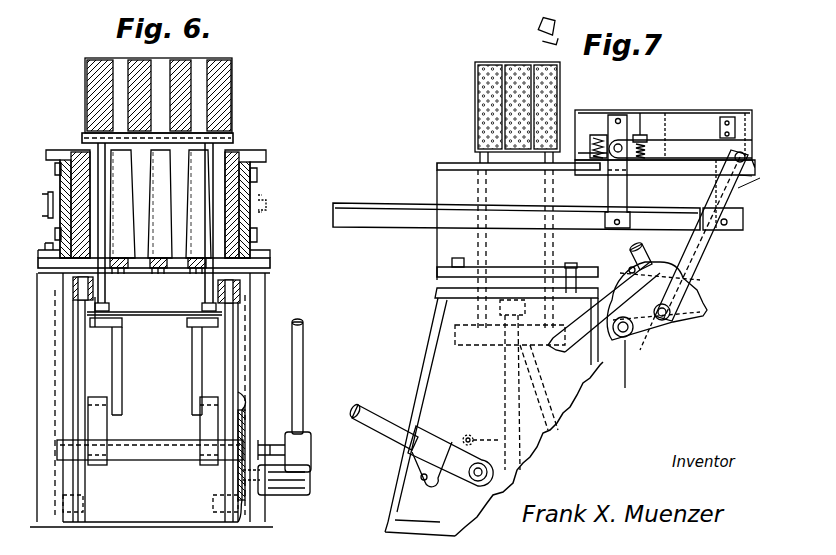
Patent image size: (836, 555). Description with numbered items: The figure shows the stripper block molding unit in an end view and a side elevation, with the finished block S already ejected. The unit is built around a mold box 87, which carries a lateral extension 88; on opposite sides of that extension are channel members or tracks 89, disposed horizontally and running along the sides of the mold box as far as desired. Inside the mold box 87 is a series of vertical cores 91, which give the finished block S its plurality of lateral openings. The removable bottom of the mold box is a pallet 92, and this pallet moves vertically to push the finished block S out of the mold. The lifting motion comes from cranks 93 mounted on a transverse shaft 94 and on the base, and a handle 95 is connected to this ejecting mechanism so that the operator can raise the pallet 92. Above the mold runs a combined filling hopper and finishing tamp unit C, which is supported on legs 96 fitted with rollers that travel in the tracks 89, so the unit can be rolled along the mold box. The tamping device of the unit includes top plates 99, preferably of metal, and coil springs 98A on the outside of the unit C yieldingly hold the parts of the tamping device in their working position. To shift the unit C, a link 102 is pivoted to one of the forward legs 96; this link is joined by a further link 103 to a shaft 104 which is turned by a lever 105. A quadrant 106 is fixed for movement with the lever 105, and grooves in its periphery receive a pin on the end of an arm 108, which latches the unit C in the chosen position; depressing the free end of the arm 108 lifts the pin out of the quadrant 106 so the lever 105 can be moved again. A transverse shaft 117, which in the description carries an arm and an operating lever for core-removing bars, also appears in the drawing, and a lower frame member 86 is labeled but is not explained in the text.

In FIG. 6, the finished block S is at (200, 103).
In FIG. 7, the finished block S is at (490, 72).
In FIG. 6, the pallet 92 is at (236, 131).
In FIG. 6, the vertical cores 91 is at (198, 175).
In FIG. 6, the mold box 87 is at (256, 190).
In FIG. 7, the mold box 87 is at (448, 182).
In FIG. 6, the tracks 89 is at (262, 202).
In FIG. 7, the tracks 89 is at (420, 210).
In FIG. 6, the lower frame 86 is at (253, 330).
In FIG. 6, the cranks 93 is at (208, 432).
In FIG. 6, the transverse shaft 94 is at (140, 450).
In FIG. 7, the transverse shaft 94 is at (484, 478).
In FIG. 6, the handle 95 is at (299, 375).
In FIG. 7, the handle 95 is at (385, 428).
In FIG. 7, the legs 96 is at (715, 180).
In FIG. 7, the coil springs 98A is at (586, 132).
In FIG. 7, the top plates 99 is at (643, 130).
In FIG. 7, the link 102 is at (670, 150).
In FIG. 7, the combined filling hopper and finishing tamp unit C is at (745, 114).
In FIG. 7, the lateral extension 88 is at (740, 180).
In FIG. 7, the link 103 is at (702, 244).
In FIG. 7, the shaft 104 is at (672, 318).
In FIG. 7, the lever 105 is at (645, 255).
In FIG. 7, the quadrant 106 is at (708, 309).
In FIG. 7, the arm 108 is at (585, 336).
In FIG. 7, the transverse shaft 117 is at (630, 373).